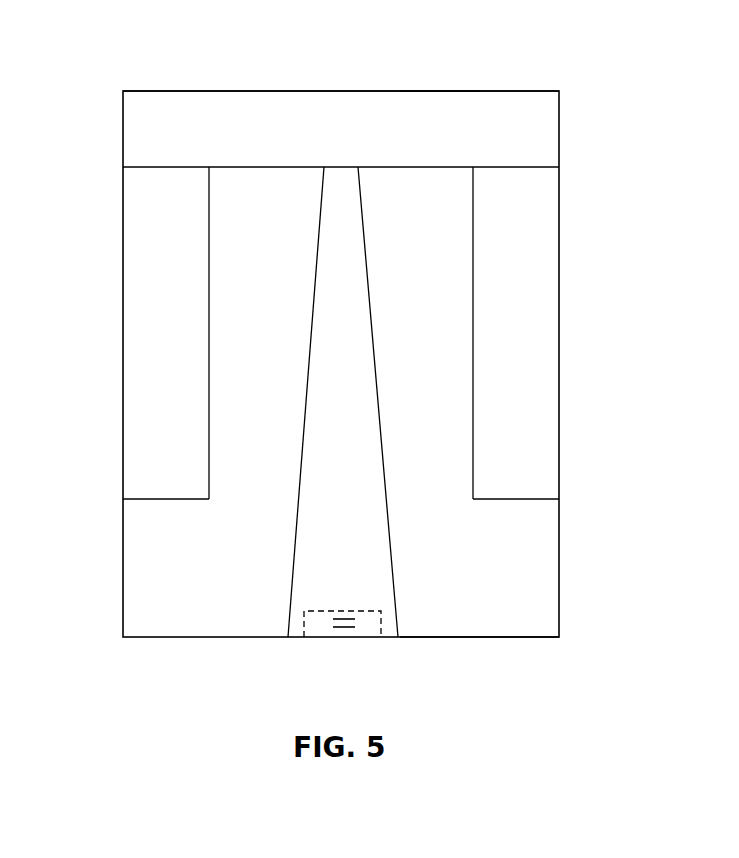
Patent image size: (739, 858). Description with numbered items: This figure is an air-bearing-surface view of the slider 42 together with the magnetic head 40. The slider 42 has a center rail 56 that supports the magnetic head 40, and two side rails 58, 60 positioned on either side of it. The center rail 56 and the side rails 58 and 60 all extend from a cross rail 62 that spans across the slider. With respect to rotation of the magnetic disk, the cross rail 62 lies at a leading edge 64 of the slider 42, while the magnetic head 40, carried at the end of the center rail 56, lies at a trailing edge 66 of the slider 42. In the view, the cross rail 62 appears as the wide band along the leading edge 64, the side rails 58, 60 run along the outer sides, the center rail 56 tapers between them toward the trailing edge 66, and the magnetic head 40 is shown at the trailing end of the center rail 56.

The magnetic head 40 is at (322, 630).
The slider 42 is at (122, 590).
The center rail 56 is at (327, 280).
The side rail 58 is at (138, 245).
The side rail 60 is at (543, 247).
The cross rail 62 is at (263, 103).
The leading edge 64 is at (440, 91).
The trailing edge 66 is at (462, 637).